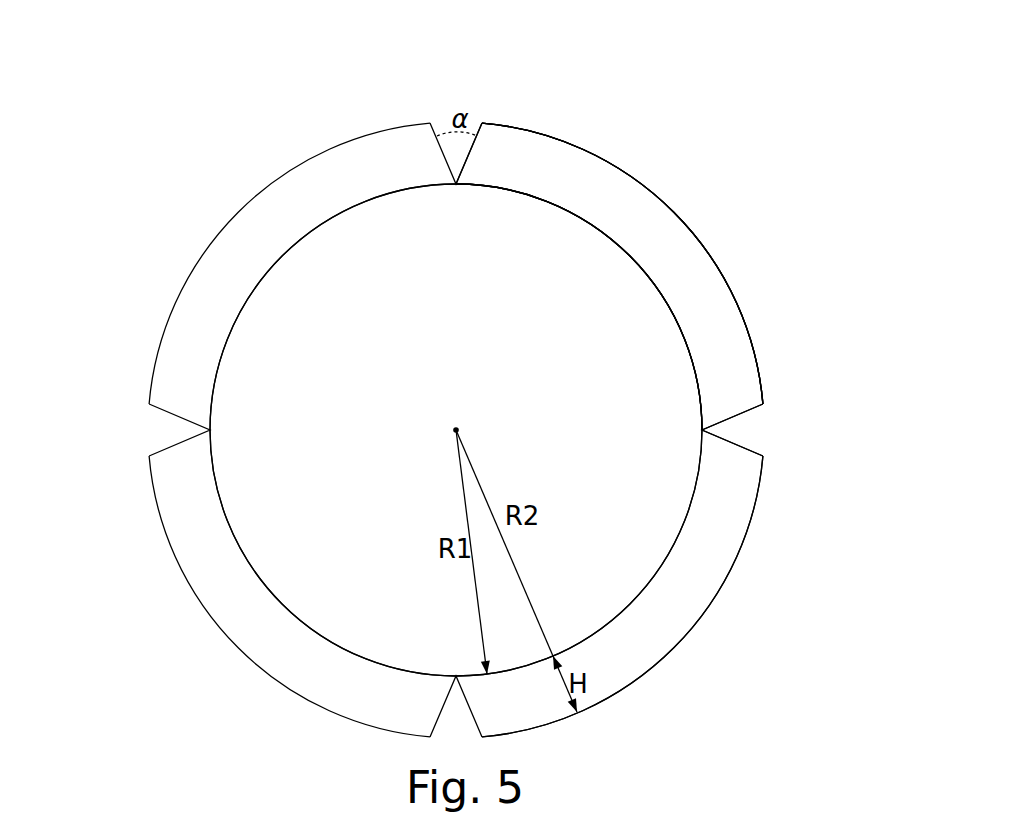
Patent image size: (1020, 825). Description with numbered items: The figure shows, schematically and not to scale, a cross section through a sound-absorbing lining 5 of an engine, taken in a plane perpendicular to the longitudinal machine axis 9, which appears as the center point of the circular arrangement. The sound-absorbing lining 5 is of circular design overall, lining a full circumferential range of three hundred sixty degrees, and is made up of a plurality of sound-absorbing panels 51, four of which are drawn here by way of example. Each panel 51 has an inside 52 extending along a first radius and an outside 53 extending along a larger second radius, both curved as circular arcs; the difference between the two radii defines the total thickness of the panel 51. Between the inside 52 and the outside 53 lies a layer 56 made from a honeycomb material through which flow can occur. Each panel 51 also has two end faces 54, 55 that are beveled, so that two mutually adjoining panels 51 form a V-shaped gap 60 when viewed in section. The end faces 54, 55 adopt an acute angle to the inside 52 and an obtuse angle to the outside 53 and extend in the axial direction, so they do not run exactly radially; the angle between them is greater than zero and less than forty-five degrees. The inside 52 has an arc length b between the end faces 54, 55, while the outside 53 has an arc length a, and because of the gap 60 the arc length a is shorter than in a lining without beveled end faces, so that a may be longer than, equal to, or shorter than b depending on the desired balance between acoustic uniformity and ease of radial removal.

The sound-absorbing lining 5 is at (342, 115).
The machine axis 9 is at (456, 430).
The sound-absorbing panel 51 is at (313, 217).
The inside 52 is at (627, 262).
The outside 53 is at (688, 218).
The end face 54 is at (465, 158).
The end face 55 is at (745, 418).
The layer made from honeycomb material 56 is at (730, 320).
The V-shaped gap 60 is at (445, 118).
The arc length a is at (573, 140).
The arc length b is at (687, 355).